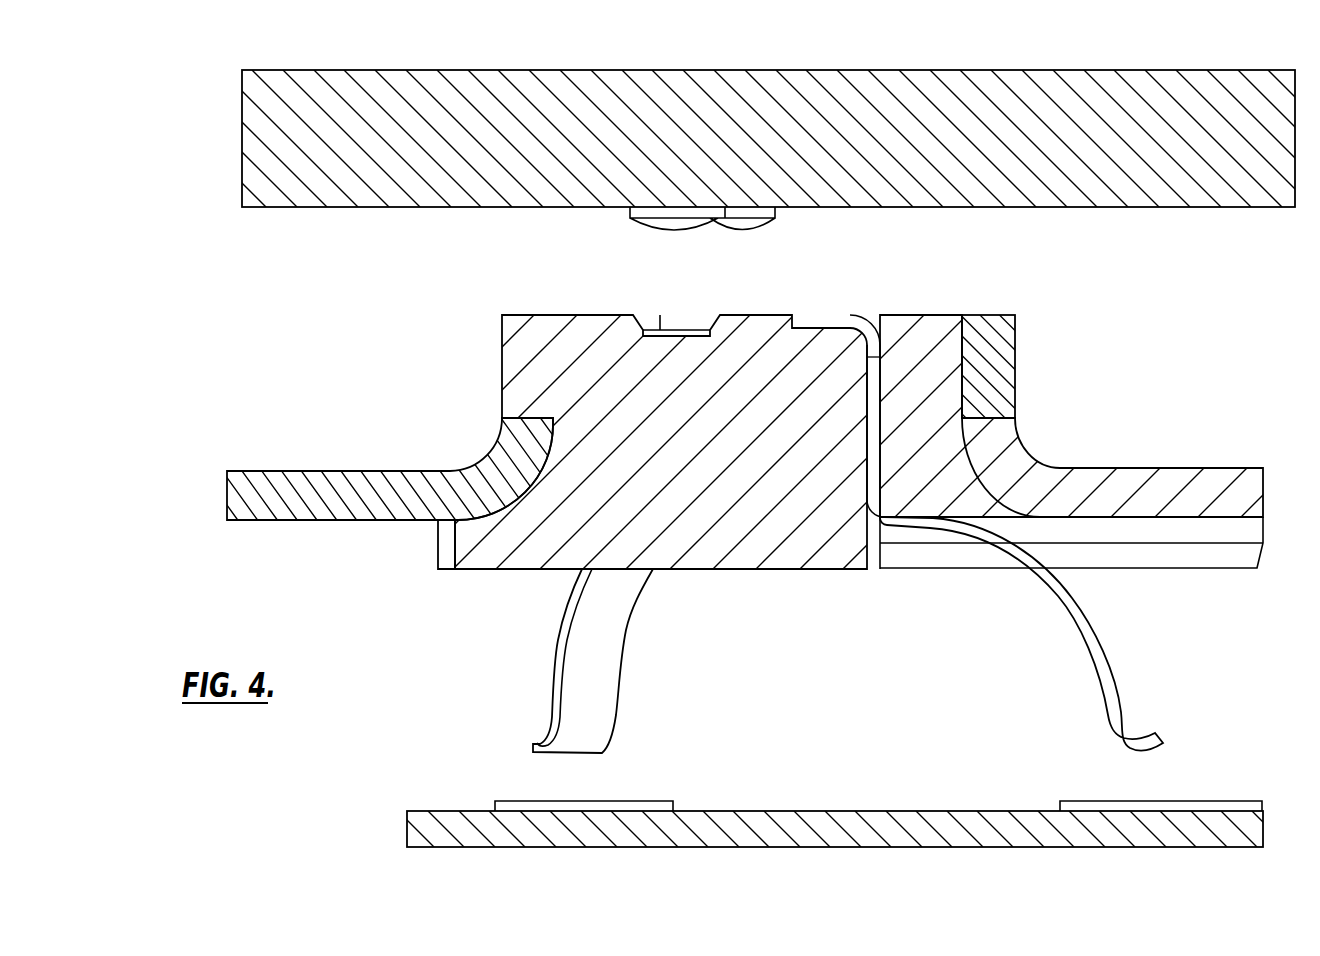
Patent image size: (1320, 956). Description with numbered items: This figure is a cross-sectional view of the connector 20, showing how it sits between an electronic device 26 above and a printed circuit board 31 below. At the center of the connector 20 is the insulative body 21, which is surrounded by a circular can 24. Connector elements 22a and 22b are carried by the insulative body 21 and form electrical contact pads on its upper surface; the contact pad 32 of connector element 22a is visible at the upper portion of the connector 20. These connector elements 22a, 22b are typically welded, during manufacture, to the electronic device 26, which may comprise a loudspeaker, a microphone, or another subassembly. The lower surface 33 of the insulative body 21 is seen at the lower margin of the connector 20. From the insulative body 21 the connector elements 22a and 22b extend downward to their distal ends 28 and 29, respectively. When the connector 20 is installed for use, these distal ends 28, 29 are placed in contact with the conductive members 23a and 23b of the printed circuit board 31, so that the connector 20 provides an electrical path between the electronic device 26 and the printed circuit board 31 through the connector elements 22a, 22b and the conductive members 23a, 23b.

The connector 20 is at (190, 397).
The insulative body 21 is at (524, 385).
The connector element 22a is at (874, 443).
The connector element 22b is at (658, 322).
The conductive member 23a is at (508, 800).
The conductive member 23b is at (1199, 801).
The circular can 24 is at (349, 488).
The electronic device 26 is at (362, 87).
The distal end 28 is at (601, 712).
The distal end 29 is at (1122, 729).
The printed circuit board 31 is at (960, 832).
The contact pad 32 is at (829, 317).
The lower surface 33 is at (718, 552).